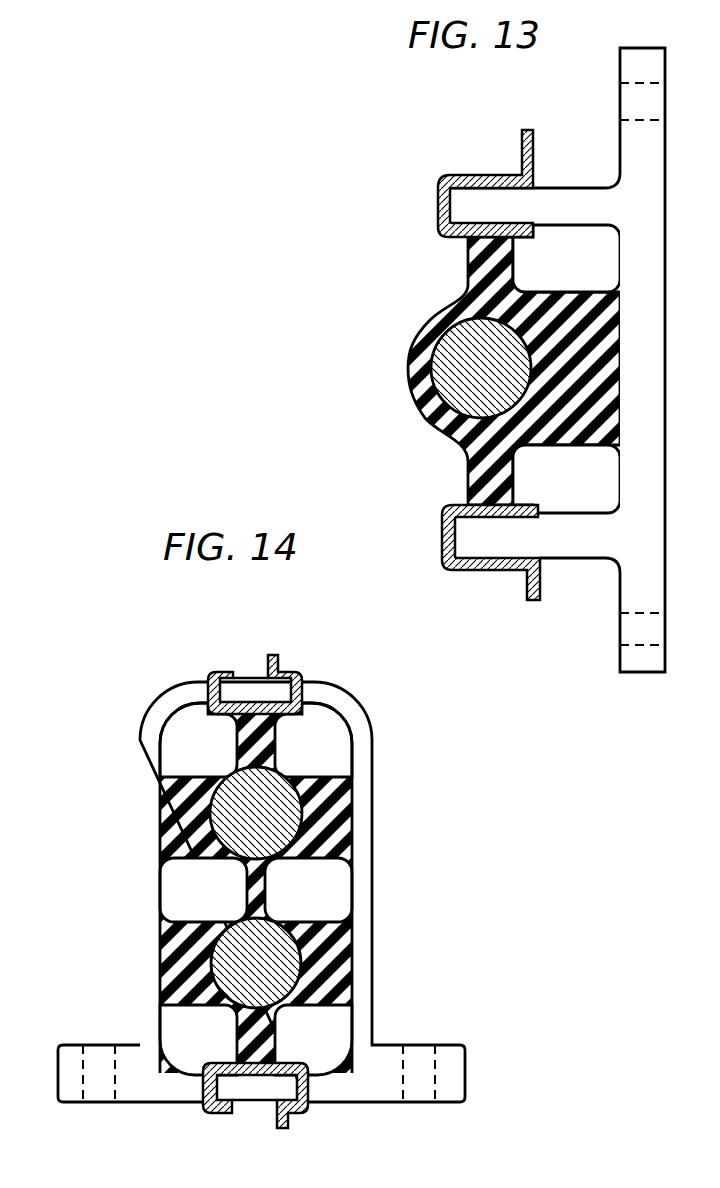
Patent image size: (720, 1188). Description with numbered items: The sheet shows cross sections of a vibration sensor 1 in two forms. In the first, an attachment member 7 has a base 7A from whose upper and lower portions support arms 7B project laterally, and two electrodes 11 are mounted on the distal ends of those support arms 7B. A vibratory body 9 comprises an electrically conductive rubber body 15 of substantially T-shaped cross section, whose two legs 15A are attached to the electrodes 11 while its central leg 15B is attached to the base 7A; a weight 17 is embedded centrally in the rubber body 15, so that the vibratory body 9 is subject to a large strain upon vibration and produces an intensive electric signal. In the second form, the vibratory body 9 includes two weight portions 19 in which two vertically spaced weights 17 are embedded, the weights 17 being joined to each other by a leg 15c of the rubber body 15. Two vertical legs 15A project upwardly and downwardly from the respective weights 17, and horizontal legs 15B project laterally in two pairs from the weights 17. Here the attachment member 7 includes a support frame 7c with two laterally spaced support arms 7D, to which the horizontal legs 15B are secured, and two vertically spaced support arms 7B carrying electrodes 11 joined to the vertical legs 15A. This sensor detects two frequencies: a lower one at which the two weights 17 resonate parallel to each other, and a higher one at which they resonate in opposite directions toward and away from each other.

In FIG. 13, the vibration sensor 1 is at (394, 281).
In FIG. 14, the vibration sensor 1 is at (133, 706).
In FIG. 13, the attachment member 7 is at (655, 381).
In FIG. 14, the attachment member 7 is at (380, 1082).
In FIG. 13, the base 7A is at (647, 300).
In FIG. 13, the support arms 7B is at (572, 200).
In FIG. 14, the support arms 7B is at (246, 690).
In FIG. 14, the support frame 7c is at (340, 708).
In FIG. 14, the support arms 7D is at (362, 805).
In FIG. 13, the vibratory body 9 is at (428, 427).
In FIG. 14, the vibratory body 9 is at (325, 833).
In FIG. 13, the electrodes 11 is at (477, 173).
In FIG. 13, the electrically conductive rubber body 15 is at (412, 360).
In FIG. 13, the legs 15A is at (474, 264).
In FIG. 14, the legs 15A is at (263, 743).
In FIG. 13, the central leg 15B is at (597, 412).
In FIG. 14, the central leg 15B is at (188, 790).
In FIG. 14, the leg 15c is at (247, 890).
In FIG. 13, the weight 17 is at (455, 340).
In FIG. 14, the weight 17 is at (237, 818).
In FIG. 13, the weight portions 19 is at (410, 388).
In FIG. 14, the weight portions 19 is at (283, 765).